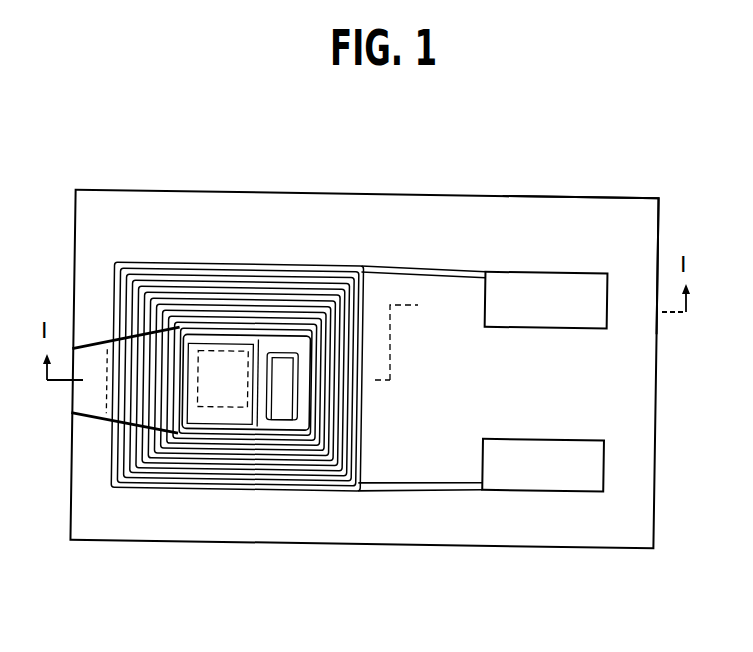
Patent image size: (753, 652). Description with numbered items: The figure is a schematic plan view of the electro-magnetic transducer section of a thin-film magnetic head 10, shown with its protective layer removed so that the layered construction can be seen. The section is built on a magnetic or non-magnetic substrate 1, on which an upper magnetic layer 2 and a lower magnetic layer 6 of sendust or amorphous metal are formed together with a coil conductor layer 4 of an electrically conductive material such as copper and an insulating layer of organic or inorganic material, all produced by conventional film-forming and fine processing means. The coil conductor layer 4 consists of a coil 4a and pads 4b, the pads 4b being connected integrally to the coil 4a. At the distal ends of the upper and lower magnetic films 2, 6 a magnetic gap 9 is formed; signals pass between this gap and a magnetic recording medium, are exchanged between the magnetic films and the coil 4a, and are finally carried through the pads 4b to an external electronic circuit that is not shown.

The substrate 1 is at (345, 545).
The thin-film magnetic head 10 is at (612, 190).
The coil conductor layer 4 is at (378, 266).
The coil 4a is at (162, 265).
The pads 4b is at (505, 288).
The magnetic gap 9 is at (82, 404).
The lower magnetic layer 6 is at (180, 493).
The upper magnetic layer 2 is at (230, 471).